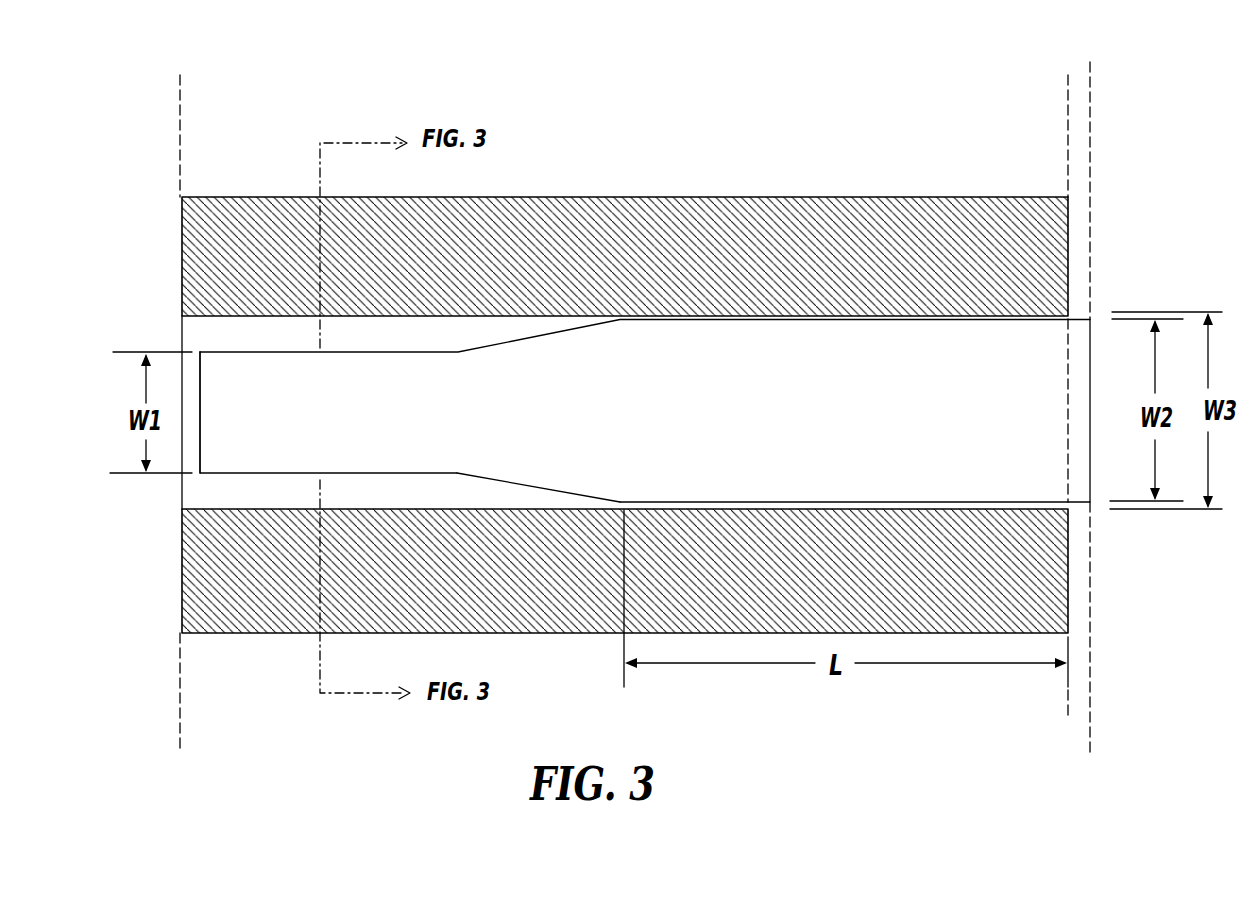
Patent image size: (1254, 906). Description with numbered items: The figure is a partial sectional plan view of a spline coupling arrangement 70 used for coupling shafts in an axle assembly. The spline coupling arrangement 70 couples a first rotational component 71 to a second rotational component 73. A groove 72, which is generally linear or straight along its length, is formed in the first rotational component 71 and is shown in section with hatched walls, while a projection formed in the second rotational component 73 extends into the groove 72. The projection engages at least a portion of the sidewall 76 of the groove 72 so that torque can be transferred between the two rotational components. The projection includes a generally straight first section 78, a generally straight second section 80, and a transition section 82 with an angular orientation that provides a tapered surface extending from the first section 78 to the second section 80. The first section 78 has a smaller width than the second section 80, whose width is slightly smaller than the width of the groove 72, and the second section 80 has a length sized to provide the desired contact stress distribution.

The spline coupling arrangement 70 is at (684, 150).
The first rotational component 71 is at (180, 147).
The groove 72 is at (226, 333).
The second rotational component 73 is at (1093, 202).
The sidewall 76 is at (420, 317).
The first section 78 is at (273, 475).
The second section 80 is at (990, 503).
The transition section 82 is at (508, 482).